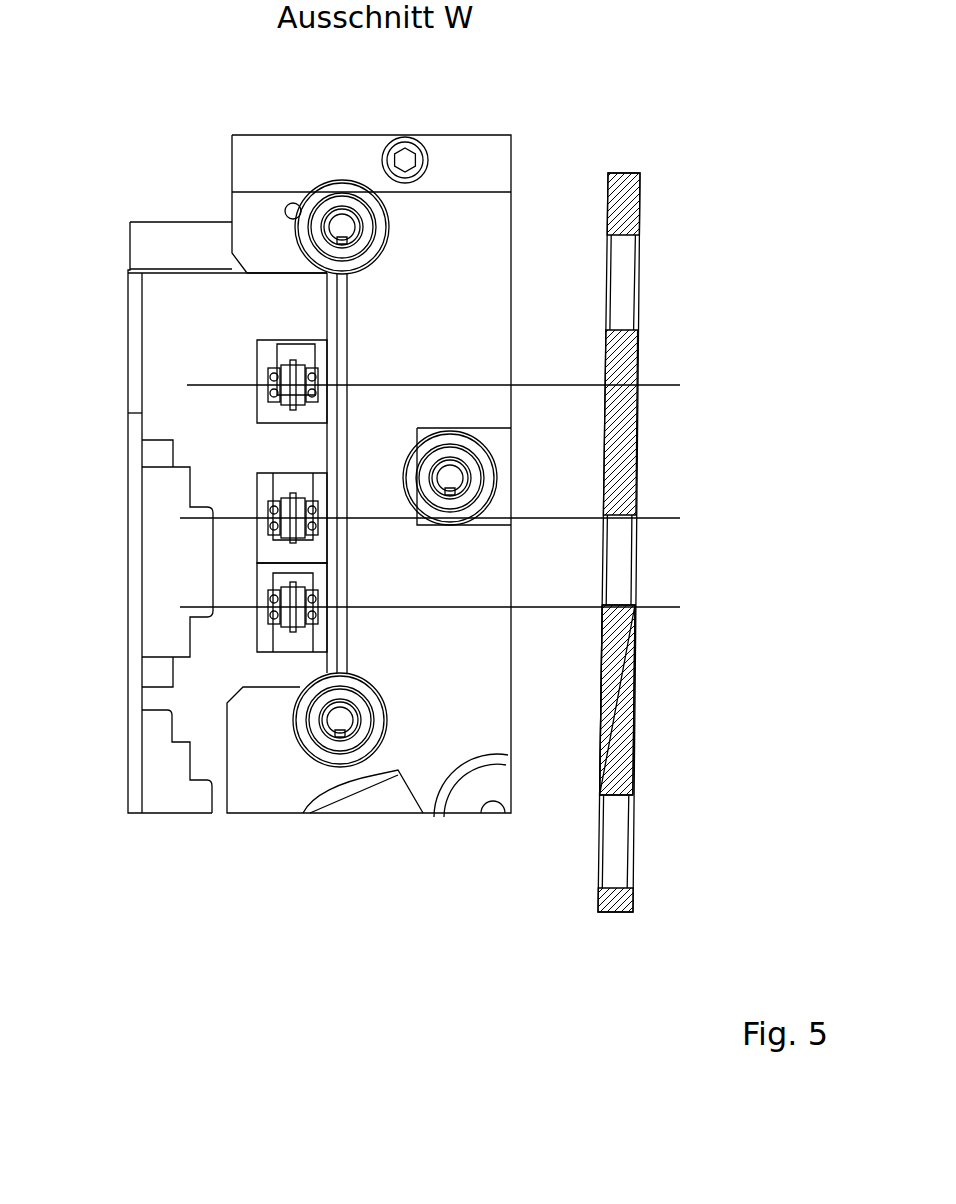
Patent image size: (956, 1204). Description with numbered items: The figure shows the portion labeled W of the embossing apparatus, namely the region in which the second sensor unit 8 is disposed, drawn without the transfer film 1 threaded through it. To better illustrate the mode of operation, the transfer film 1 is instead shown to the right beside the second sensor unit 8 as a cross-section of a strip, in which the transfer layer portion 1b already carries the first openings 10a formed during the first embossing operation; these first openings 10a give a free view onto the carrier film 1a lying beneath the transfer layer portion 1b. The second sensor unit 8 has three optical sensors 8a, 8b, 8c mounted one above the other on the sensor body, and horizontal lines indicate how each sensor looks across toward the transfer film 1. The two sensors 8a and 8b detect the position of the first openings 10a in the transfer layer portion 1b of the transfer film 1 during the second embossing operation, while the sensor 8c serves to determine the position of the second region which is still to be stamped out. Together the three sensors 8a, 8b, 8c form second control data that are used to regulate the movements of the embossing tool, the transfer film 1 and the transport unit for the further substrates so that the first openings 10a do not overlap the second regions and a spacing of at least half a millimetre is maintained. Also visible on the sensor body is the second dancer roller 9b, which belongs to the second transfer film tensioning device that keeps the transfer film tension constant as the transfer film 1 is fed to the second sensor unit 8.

The transfer film 1 is at (638, 755).
The carrier film 1a is at (627, 287).
The transfer layer portion 1b is at (623, 208).
The first openings 10a is at (638, 302).
The second sensor unit 8 is at (157, 370).
The optical sensor 8a is at (267, 607).
The optical sensor 8b is at (267, 518).
The optical sensor 8c is at (270, 380).
The second dancer roller 9b is at (458, 472).